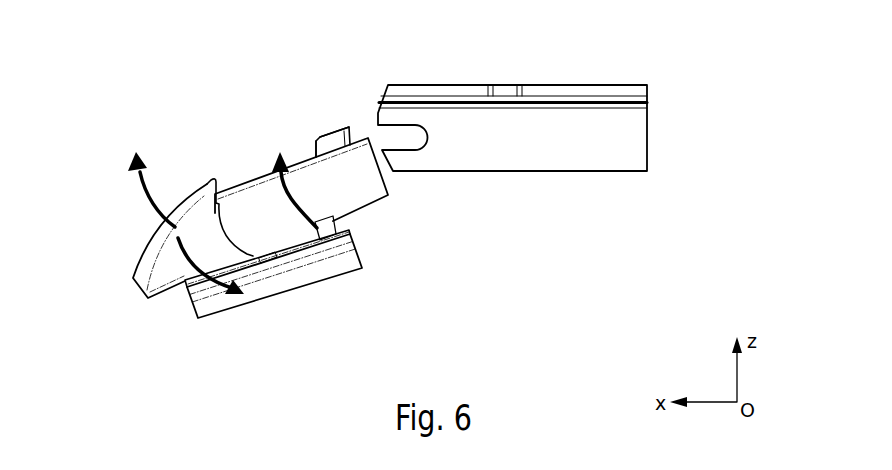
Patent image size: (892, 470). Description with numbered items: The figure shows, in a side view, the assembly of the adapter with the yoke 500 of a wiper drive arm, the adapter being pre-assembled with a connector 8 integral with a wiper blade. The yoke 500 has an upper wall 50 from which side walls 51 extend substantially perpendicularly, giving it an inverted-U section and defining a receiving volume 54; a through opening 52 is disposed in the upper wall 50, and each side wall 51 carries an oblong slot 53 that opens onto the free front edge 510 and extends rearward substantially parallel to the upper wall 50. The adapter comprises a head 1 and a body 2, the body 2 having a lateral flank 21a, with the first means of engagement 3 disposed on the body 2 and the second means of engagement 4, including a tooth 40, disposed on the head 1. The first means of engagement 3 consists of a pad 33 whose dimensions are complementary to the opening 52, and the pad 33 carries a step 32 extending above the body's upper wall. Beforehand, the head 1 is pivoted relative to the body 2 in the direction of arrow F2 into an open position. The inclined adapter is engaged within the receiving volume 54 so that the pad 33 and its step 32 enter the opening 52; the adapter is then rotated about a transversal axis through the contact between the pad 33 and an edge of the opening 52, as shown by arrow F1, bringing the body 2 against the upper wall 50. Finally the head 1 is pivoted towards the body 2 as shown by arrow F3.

The head 1 is at (136, 217).
The body 2 is at (386, 215).
The lateral flank 21a is at (357, 192).
The first means of engagement 3 is at (318, 114).
The step 32 is at (315, 142).
The pad 33 is at (343, 129).
The second means of engagement 4 is at (290, 236).
The connector 8 is at (207, 294).
The tooth 40 is at (208, 178).
The yoke 500 is at (631, 67).
The upper wall 50 is at (547, 90).
The side wall 51 is at (582, 150).
The through opening 52 is at (503, 85).
The slot 53 is at (408, 137).
The receiving volume 54 is at (636, 134).
The free front edge 510 is at (378, 107).
The arrow F1 is at (300, 214).
The arrow F2 is at (140, 276).
The arrow F3 is at (147, 192).